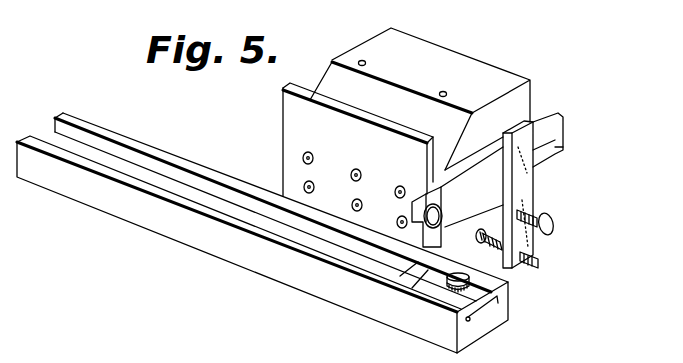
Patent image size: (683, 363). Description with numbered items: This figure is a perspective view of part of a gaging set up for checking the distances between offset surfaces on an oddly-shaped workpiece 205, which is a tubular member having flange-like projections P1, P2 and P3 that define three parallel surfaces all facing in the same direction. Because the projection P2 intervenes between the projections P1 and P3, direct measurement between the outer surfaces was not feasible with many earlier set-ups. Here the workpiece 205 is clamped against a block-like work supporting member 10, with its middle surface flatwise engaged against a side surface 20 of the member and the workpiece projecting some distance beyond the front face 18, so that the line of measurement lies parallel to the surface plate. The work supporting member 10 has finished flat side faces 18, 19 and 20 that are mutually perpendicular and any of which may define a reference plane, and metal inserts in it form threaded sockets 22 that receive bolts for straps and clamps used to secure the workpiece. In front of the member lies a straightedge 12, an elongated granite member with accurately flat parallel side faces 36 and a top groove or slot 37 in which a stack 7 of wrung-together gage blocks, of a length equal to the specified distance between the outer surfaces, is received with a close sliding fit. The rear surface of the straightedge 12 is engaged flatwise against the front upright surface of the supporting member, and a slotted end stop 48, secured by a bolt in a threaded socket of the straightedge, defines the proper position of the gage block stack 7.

The work supporting member 10 is at (468, 71).
The straightedge 12 is at (118, 216).
The side faces 36 is at (217, 240).
The groove or slot 37 is at (101, 146).
The stack of gage blocks 7 is at (402, 275).
The side face 18 is at (292, 142).
The side face 19 is at (283, 102).
The threaded sockets 22 is at (440, 92).
The side face 20 is at (523, 92).
The flange-like projection P1 is at (562, 121).
The workpiece 205 is at (568, 145).
The flange-like projection P2 is at (410, 210).
The flange-like projection P3 is at (445, 248).
The slotted end stop 48 is at (477, 295).